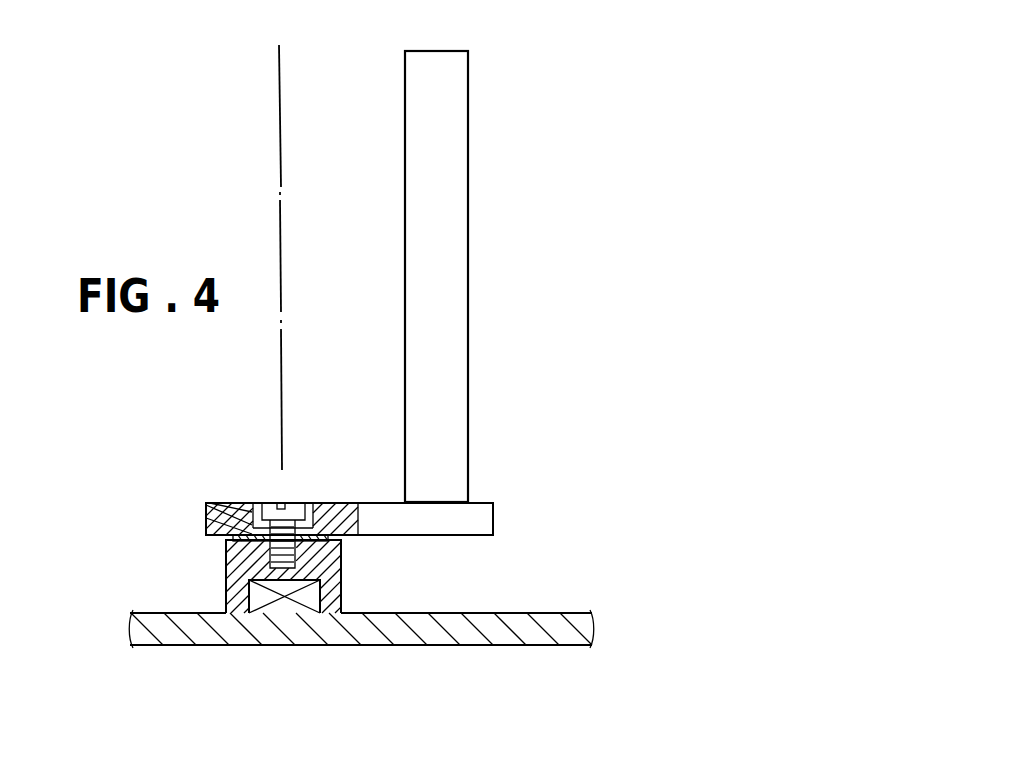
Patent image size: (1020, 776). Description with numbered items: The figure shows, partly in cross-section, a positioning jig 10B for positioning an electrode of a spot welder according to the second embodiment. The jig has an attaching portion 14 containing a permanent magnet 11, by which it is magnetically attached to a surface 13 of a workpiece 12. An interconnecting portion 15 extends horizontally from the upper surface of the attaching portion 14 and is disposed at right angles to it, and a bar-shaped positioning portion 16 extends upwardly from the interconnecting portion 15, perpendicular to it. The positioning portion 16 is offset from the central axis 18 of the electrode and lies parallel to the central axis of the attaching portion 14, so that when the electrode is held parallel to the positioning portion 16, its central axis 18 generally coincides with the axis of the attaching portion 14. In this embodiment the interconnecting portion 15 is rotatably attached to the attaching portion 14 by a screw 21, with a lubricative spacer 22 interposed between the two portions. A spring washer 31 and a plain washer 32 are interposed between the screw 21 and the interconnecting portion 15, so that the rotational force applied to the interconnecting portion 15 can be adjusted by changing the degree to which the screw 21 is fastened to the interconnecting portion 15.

The positioning jig 10B is at (600, 217).
The permanent magnet 11 is at (277, 605).
The workpiece 12 is at (592, 627).
The surface 13 is at (379, 611).
The attaching portion 14 is at (225, 583).
The interconnecting portion 15 is at (470, 521).
The positioning portion 16 is at (450, 329).
The central axis 18 is at (280, 154).
The screw 21 is at (262, 503).
The lubricative spacer 22 is at (233, 538).
The spring washer 31 is at (218, 502).
The plain washer 32 is at (205, 513).